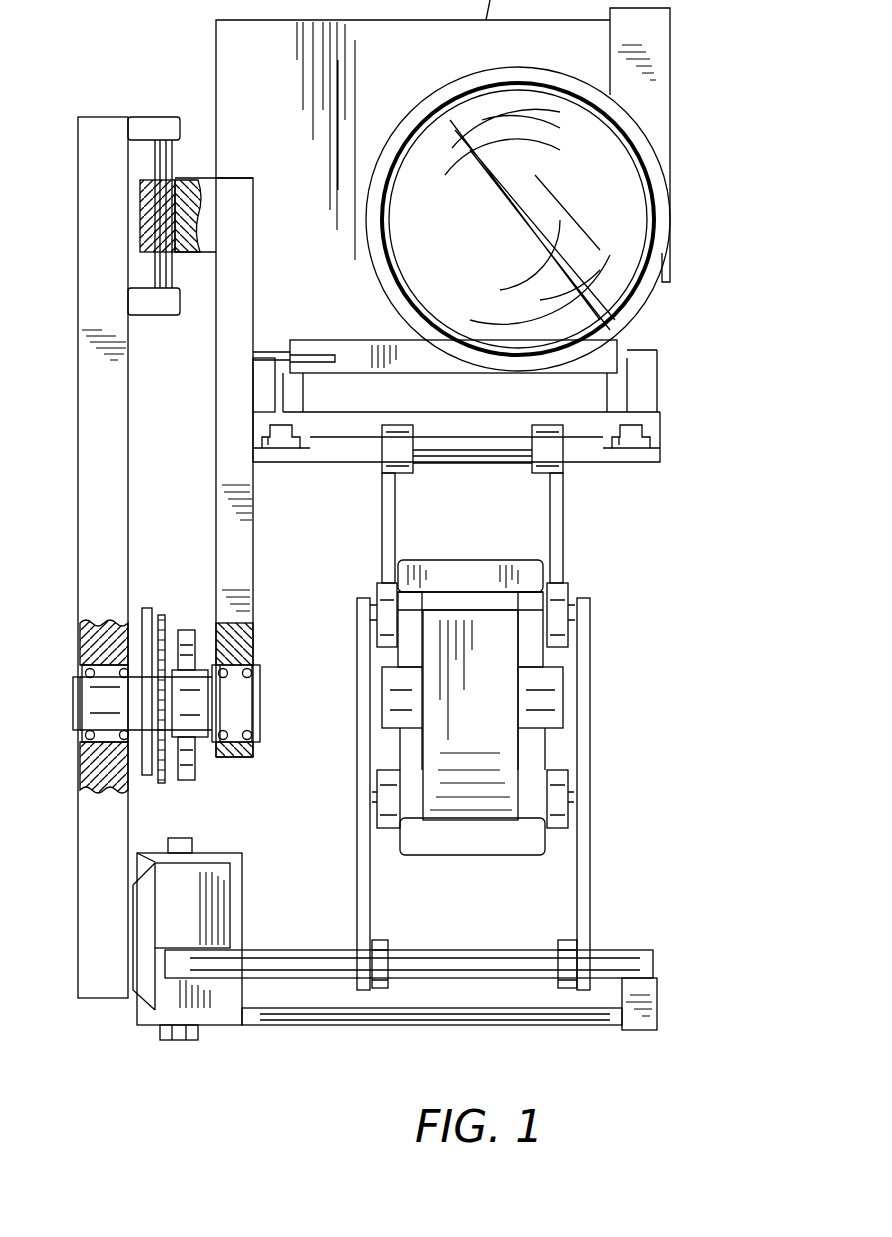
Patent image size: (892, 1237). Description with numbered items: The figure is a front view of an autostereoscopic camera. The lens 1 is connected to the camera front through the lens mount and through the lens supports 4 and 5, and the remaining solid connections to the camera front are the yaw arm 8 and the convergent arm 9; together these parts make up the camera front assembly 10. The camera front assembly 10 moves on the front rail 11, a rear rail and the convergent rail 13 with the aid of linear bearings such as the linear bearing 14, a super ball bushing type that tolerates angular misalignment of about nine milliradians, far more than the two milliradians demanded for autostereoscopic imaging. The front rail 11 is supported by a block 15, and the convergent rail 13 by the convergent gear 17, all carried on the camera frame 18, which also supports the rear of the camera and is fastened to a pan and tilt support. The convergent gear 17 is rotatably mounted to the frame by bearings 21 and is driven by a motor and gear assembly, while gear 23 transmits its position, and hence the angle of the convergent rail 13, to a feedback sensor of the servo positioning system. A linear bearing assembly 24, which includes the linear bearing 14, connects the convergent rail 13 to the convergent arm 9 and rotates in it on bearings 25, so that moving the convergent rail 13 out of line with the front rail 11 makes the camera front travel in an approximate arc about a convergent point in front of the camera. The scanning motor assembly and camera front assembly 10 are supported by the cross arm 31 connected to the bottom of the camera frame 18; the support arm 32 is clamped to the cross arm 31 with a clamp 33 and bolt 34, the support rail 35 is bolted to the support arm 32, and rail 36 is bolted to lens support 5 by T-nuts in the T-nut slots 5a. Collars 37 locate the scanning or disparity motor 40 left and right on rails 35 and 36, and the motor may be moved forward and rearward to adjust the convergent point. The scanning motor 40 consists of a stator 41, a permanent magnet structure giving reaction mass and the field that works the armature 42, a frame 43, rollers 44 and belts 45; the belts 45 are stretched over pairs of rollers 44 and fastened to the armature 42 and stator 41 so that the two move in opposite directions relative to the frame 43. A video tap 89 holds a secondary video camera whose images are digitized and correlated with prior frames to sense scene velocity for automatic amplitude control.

The lens 1 is at (408, 120).
The lens support 4 is at (350, 348).
The lens support 5 is at (312, 420).
The T-nut slots 5a is at (280, 437).
The yaw arm 8 is at (190, 180).
The convergent arm 9 is at (253, 550).
The camera front assembly 10 is at (702, 175).
The front rail 11 is at (172, 160).
The convergent rail 13 is at (186, 780).
The linear bearing 14 is at (140, 268).
The block 15 is at (160, 118).
The convergent gear 17 is at (163, 626).
The camera frame 18 is at (104, 122).
The bearings 21 is at (112, 722).
The gear 23 is at (146, 605).
The linear bearing assembly 24 is at (262, 705).
The bearings 25 is at (250, 676).
The cross arm 31 is at (140, 934).
The support arm 32 is at (655, 1005).
The clamp 33 is at (196, 858).
The bolt 34 is at (182, 1040).
The support rail 35 is at (318, 955).
The rail 36 is at (476, 452).
The collars 37 is at (403, 475).
The scanning motor 40 is at (612, 675).
The stator 41 is at (470, 570).
The armature 42 is at (395, 525).
The frame 43 is at (590, 740).
The rollers 44 is at (580, 580).
The belts 45 is at (505, 726).
The video tap 89 is at (670, 112).